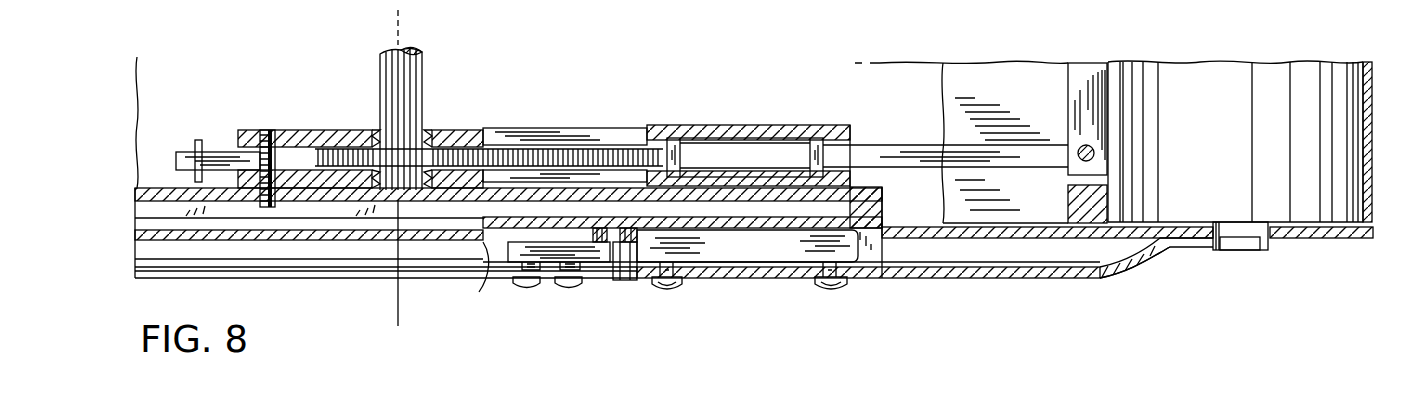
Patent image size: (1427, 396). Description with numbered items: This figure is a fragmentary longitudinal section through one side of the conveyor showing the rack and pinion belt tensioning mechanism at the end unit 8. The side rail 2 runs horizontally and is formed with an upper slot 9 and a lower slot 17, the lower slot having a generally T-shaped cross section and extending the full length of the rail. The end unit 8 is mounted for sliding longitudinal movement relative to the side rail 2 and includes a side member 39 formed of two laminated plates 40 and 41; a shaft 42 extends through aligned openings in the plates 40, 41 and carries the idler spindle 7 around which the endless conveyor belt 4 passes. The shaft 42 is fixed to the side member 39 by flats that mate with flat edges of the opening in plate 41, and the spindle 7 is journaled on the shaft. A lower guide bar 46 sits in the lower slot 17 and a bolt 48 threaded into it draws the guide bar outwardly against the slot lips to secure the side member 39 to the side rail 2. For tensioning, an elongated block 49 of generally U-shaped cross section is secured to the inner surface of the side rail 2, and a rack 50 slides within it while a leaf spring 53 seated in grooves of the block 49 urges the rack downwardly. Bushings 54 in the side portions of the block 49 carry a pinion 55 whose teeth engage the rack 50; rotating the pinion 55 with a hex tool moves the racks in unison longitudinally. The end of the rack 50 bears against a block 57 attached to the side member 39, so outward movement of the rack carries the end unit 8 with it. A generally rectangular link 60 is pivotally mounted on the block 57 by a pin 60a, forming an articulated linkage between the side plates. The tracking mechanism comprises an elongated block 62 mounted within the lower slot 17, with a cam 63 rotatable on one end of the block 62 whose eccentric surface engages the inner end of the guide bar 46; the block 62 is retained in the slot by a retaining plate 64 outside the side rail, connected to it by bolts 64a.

The side rail 2 is at (333, 285).
The conveyor belt 4 is at (982, 83).
The idler spindle 7 is at (1325, 170).
The end unit 8 is at (1133, 268).
The upper slot 9 is at (462, 15).
The lower slot 17 is at (470, 283).
The side member 39 is at (1027, 284).
The laminated plate 40 is at (992, 233).
The laminated plate 41 is at (950, 278).
The shaft 42 is at (1223, 250).
The lower guide bar 46 is at (726, 245).
The bolt 48 is at (665, 292).
The elongated block 49 is at (668, 132).
The rack 50 is at (571, 157).
The leaf spring 53 is at (753, 152).
The bushing 54 is at (376, 182).
The pinion 55 is at (410, 78).
The block 57 is at (1073, 200).
The link 60 is at (1073, 95).
The pin 60a is at (1087, 144).
The elongated block 62 is at (518, 250).
The cam 63 is at (612, 243).
The retaining plate 64 is at (592, 277).
The bolt 64a is at (565, 290).